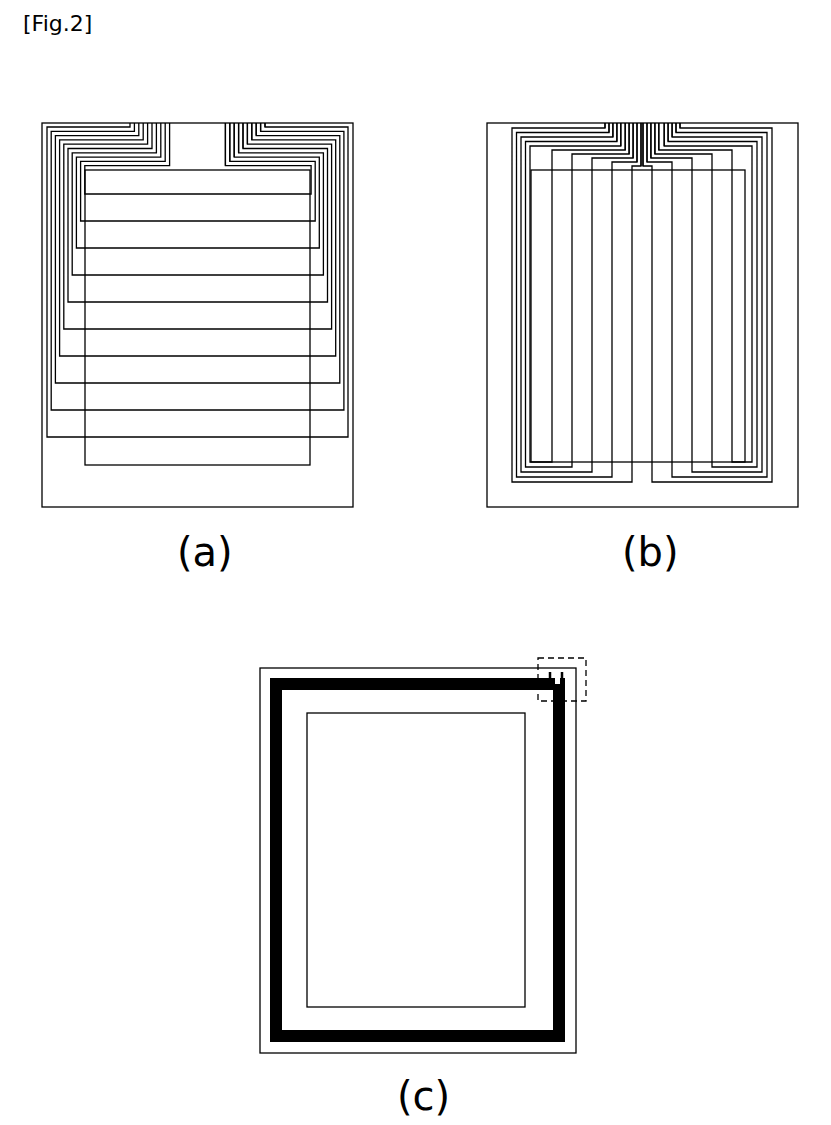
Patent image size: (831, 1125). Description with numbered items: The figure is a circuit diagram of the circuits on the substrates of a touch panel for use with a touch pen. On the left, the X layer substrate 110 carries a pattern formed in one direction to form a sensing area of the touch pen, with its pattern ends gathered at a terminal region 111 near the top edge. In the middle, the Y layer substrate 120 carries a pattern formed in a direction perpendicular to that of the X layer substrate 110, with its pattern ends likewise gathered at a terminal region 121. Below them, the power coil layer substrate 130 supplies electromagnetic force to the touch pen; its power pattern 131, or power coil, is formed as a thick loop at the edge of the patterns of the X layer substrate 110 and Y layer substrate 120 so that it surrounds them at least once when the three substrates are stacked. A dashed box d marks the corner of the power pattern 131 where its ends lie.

The X layer substrate 110 is at (90, 127).
The terminal portion of first antenna pattern 111 is at (260, 118).
The Y layer substrate 120 is at (535, 127).
The terminal portion of second antenna pattern 121 is at (680, 120).
The power coil layer substrate 130 is at (311, 671).
The power pattern 131 is at (568, 651).
The enlarged detail region d is at (586, 659).